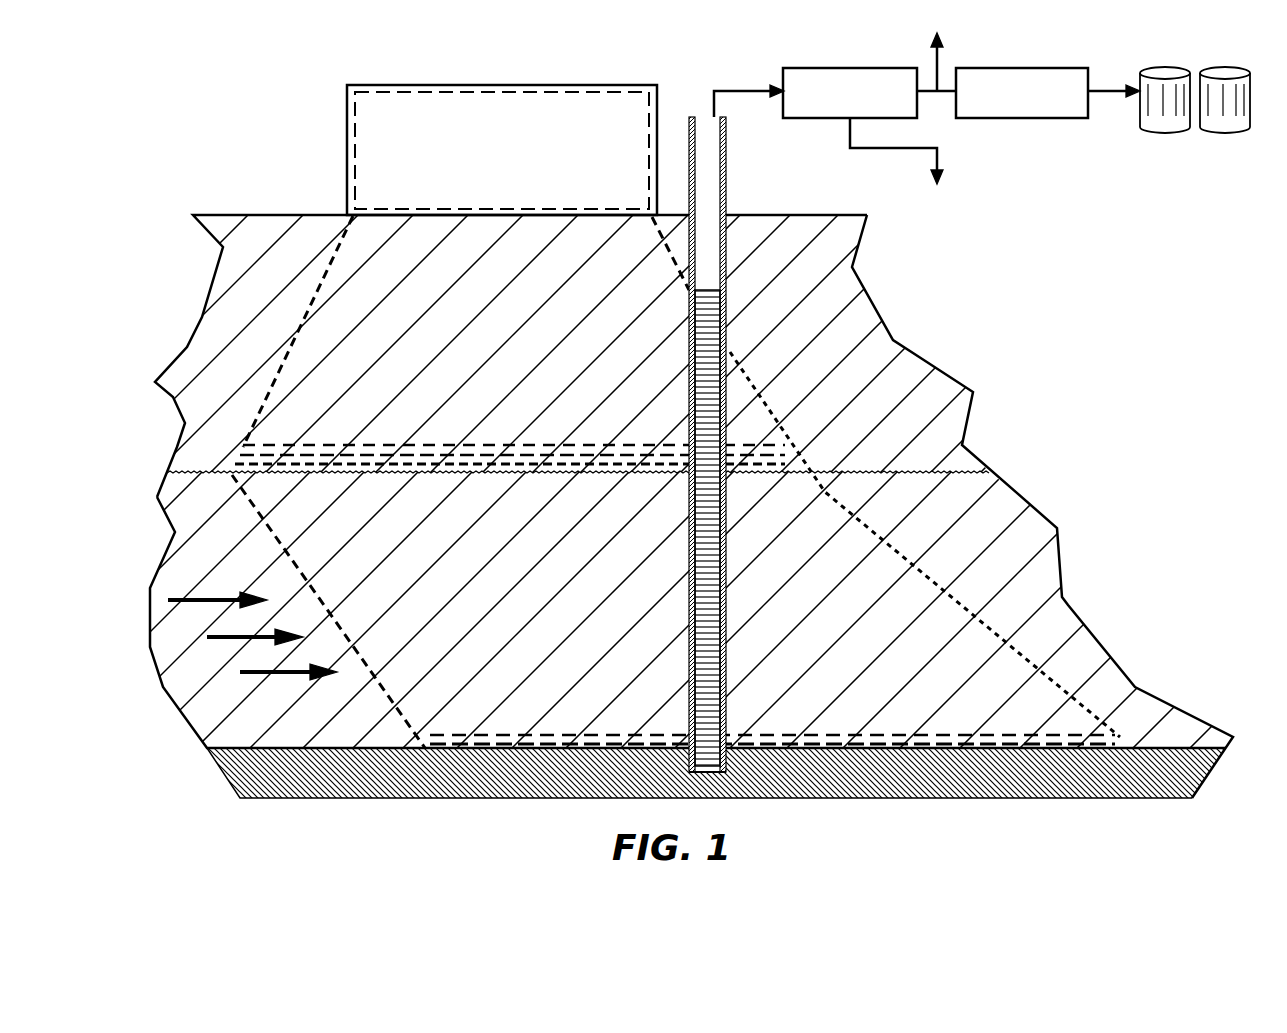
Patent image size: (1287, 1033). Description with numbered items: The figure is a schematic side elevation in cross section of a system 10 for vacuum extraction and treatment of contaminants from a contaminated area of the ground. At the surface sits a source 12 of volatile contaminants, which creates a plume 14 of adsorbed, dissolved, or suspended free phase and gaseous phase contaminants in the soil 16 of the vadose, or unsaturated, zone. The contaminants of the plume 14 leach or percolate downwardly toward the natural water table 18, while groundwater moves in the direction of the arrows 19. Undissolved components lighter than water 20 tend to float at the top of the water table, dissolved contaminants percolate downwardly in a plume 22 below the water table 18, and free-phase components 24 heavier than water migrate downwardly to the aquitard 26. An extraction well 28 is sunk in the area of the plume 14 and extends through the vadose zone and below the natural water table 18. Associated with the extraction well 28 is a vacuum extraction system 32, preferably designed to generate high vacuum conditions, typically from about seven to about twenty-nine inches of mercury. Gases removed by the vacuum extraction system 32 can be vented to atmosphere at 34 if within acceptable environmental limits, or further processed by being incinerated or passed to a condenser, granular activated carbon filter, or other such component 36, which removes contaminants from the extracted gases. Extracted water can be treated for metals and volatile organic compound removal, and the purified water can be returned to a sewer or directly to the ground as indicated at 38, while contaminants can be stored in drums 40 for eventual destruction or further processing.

The system 10 is at (326, 182).
The source 12 is at (457, 105).
The plume 14 is at (362, 349).
The soil 16 is at (920, 362).
The natural water table 18 is at (953, 468).
The arrows 19 is at (257, 690).
The components lighter than water 20 is at (293, 447).
The plume 22 is at (860, 592).
The free-phase components 24 is at (1015, 723).
The aquitard 26 is at (1163, 772).
The extraction well 28 is at (737, 333).
The vacuum extraction system 32 is at (835, 68).
The vent to atmosphere 34 is at (941, 64).
The component 36 is at (1038, 68).
The return to ground 38 is at (944, 153).
The drums 40 is at (1231, 115).